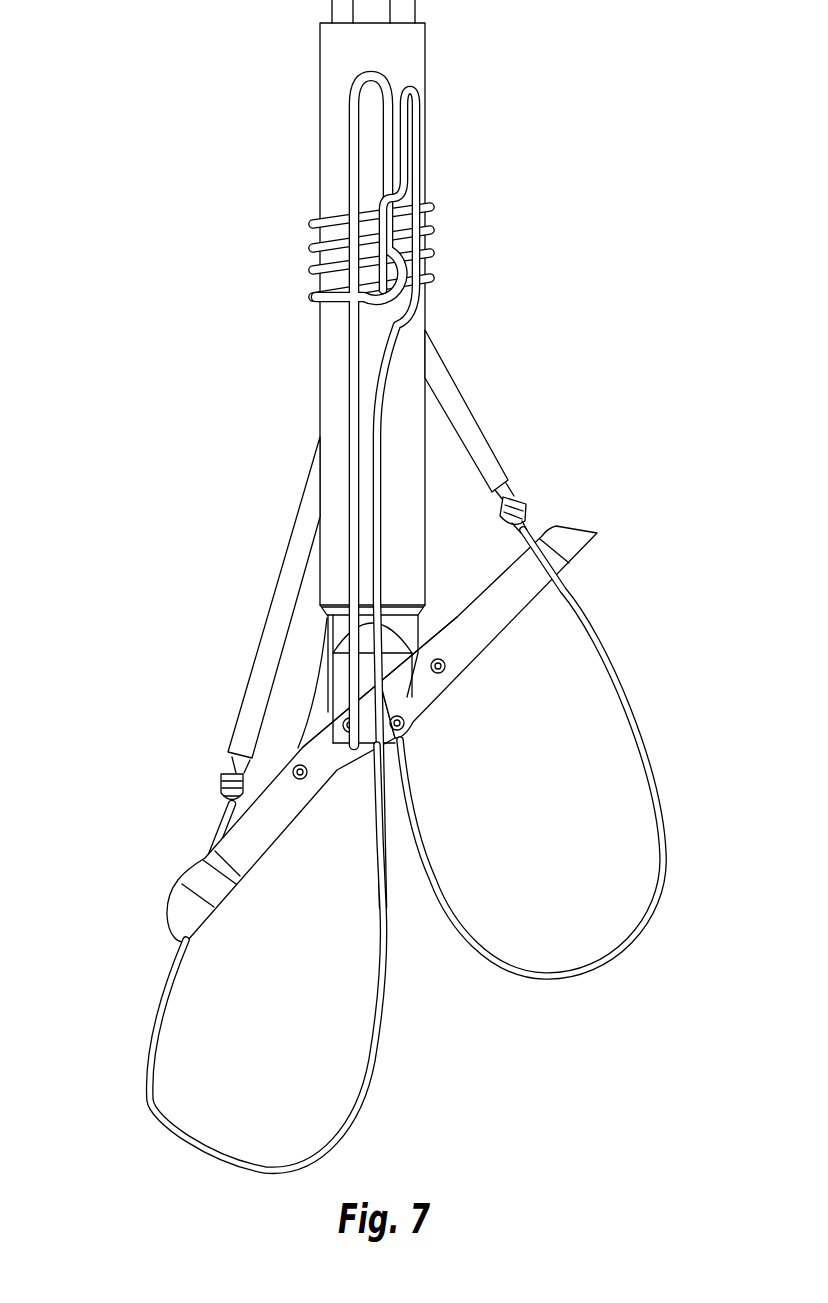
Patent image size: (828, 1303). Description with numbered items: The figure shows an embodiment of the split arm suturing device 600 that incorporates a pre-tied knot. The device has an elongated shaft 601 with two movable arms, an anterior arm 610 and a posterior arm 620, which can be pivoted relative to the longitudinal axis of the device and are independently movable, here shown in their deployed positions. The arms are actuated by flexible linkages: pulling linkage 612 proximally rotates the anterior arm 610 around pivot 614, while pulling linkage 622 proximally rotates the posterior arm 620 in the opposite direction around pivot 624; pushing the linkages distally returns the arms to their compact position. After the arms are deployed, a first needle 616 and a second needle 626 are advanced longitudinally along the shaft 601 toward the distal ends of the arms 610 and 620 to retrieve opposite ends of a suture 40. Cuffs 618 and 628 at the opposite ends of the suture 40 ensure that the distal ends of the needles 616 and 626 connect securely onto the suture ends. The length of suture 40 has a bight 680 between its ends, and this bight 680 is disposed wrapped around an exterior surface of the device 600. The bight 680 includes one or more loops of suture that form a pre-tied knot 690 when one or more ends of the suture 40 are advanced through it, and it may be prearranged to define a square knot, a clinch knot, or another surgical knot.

The split arm suturing device 600 is at (288, 317).
The shaft 601 is at (332, 355).
The bight 680 is at (340, 220).
The pre-tied knot 690 is at (435, 197).
The second needle 626 is at (473, 435).
The cuff 628 is at (526, 503).
The linkage 622 is at (427, 630).
The posterior arm 620 is at (481, 632).
The suture 40 is at (630, 703).
The pivot 624 is at (400, 730).
The first needle 616 is at (273, 627).
The linkage 612 is at (320, 693).
The cuff 618 is at (220, 777).
The pivot 614 is at (360, 737).
The anterior arm 610 is at (260, 833).